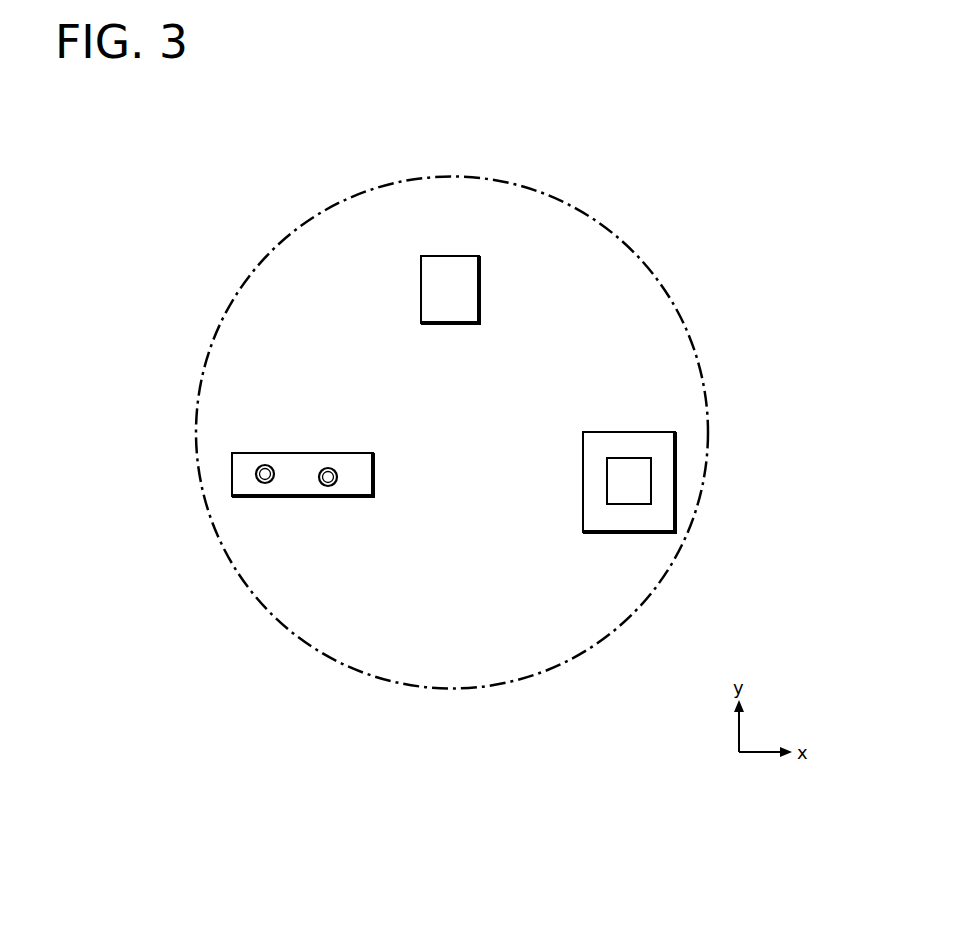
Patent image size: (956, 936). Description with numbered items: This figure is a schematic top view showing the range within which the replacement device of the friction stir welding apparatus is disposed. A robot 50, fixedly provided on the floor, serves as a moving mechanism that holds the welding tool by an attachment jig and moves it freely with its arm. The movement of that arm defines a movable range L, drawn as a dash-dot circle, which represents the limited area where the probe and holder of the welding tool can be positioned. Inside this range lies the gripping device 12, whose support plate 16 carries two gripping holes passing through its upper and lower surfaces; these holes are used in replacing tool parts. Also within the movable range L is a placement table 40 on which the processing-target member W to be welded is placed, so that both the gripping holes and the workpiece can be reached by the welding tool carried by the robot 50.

The gripping device 12 is at (276, 457).
The support plate 16 is at (355, 480).
The placement table 40 is at (684, 455).
The processing-target member W is at (624, 458).
The robot 50 is at (457, 250).
The movable range L is at (698, 360).